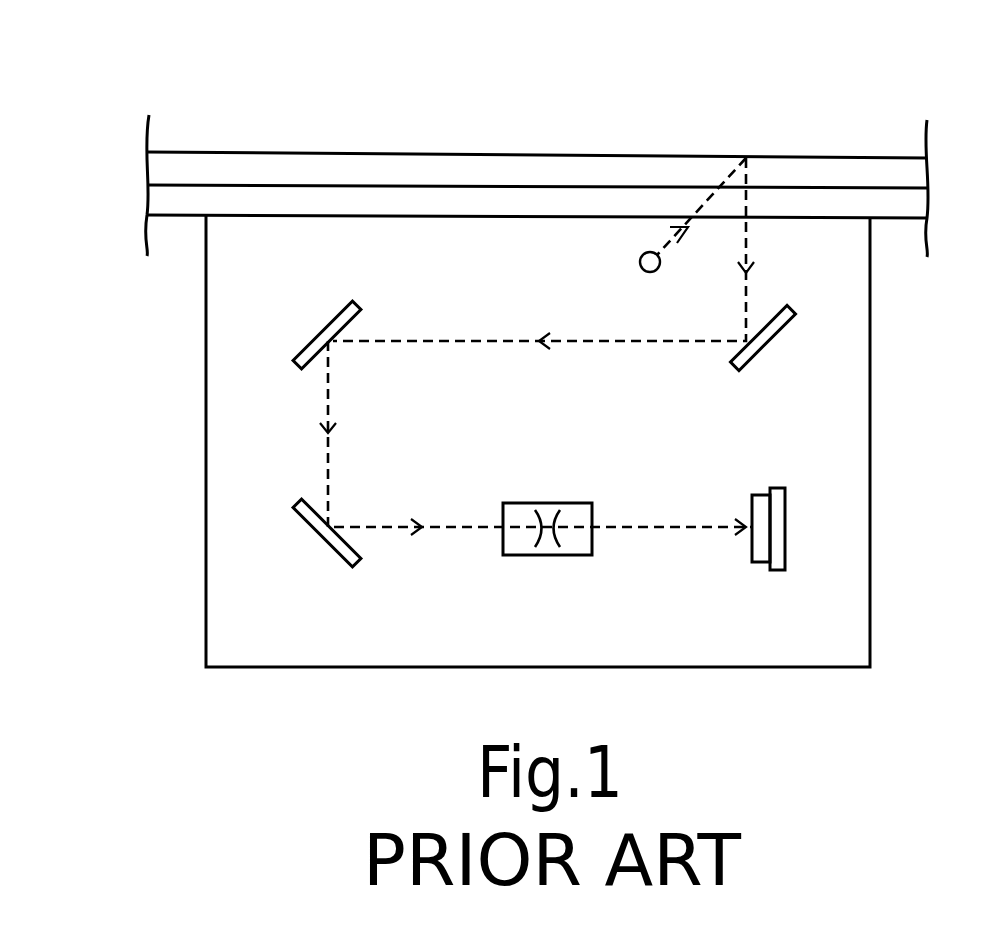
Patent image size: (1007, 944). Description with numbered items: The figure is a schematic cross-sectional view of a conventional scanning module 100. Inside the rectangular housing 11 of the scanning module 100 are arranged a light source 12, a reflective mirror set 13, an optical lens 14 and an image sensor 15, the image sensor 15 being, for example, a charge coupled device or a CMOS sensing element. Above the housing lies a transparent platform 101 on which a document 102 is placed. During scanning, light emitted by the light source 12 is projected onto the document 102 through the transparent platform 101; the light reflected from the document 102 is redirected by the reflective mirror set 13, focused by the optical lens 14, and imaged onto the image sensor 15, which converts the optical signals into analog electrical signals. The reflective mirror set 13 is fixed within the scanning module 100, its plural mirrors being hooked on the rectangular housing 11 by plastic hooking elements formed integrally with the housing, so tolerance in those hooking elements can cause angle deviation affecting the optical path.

The scanning module 100 is at (773, 77).
The transparent platform 101 is at (500, 203).
The document 102 is at (332, 170).
The rectangular housing 11 is at (871, 362).
The light source 12 is at (641, 270).
The reflective mirror set 13 is at (320, 330).
The optical lens 14 is at (548, 503).
The image sensor 15 is at (760, 493).